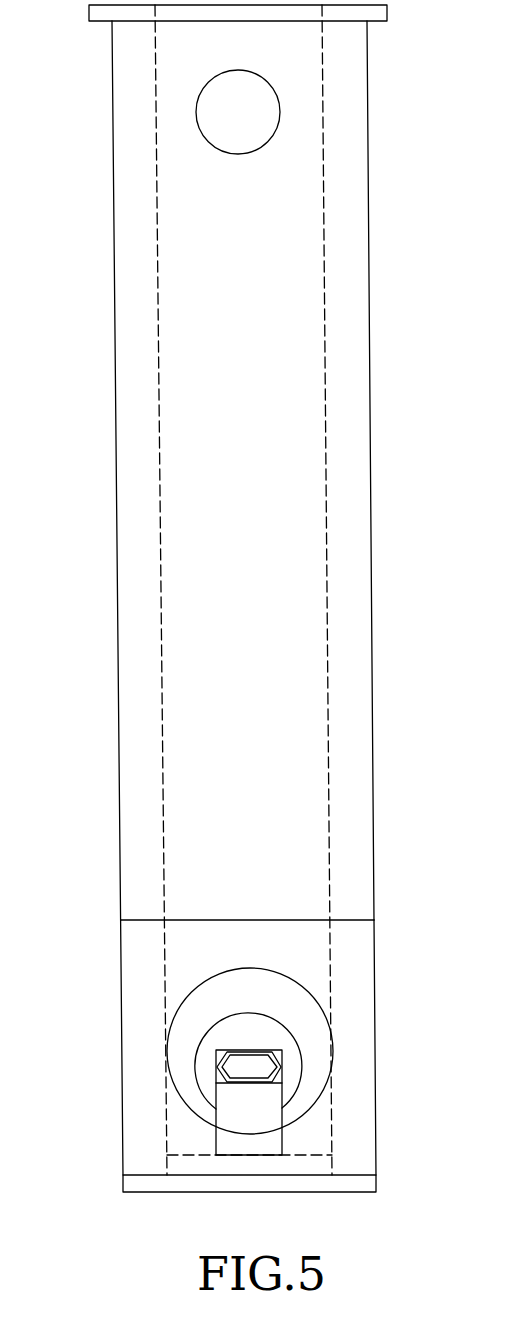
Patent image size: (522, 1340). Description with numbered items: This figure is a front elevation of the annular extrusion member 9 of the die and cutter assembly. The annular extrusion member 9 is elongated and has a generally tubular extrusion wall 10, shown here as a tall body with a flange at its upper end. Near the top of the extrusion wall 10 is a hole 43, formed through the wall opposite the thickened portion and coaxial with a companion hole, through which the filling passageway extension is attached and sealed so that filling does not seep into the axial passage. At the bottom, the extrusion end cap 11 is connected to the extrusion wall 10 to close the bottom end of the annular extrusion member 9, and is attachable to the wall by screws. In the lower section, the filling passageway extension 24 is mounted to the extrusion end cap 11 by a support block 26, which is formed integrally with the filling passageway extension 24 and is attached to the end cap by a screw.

The annular extrusion member 9 is at (108, 438).
The extrusion wall 10 is at (133, 1014).
The extrusion end cap 11 is at (145, 1183).
The filling passageway extension 24 is at (232, 1013).
The support block 26 is at (283, 1142).
The hole 43 is at (242, 142).